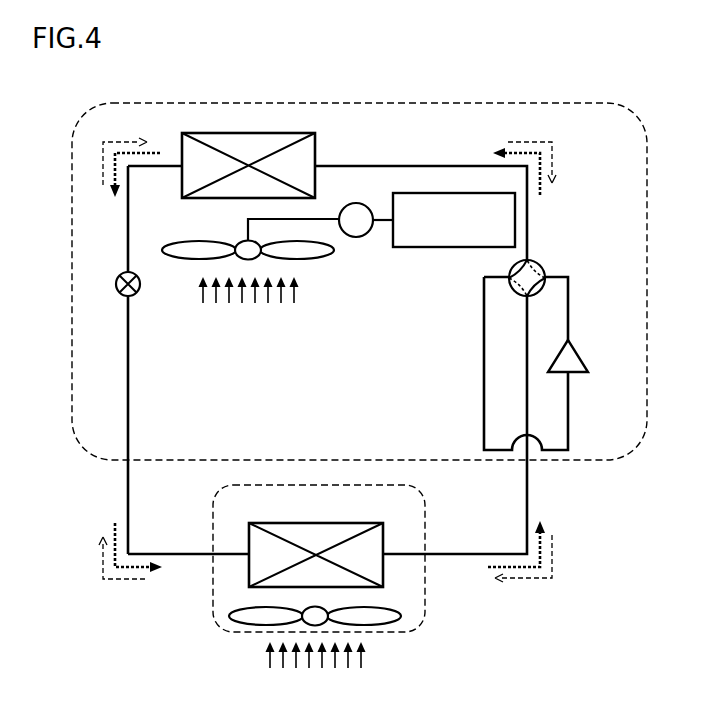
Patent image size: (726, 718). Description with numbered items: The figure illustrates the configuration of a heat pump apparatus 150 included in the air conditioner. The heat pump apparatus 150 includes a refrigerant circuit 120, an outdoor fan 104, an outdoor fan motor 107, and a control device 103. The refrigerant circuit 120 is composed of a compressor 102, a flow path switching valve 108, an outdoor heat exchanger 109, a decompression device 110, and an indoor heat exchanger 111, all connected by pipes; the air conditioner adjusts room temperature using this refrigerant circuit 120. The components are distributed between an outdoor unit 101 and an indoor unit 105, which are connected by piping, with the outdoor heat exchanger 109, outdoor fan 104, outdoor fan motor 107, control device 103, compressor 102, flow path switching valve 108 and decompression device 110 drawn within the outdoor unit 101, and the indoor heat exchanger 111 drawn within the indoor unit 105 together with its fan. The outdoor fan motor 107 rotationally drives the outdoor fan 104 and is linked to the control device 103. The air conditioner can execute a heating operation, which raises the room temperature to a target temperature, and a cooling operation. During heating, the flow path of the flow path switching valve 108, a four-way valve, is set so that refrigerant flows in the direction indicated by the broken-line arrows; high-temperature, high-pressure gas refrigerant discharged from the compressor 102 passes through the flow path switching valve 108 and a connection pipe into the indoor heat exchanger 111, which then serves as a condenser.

The outdoor unit 101 is at (647, 189).
The compressor 102 is at (578, 357).
The control device 103 is at (462, 193).
The outdoor fan 104 is at (178, 265).
The indoor unit 105 is at (238, 633).
The outdoor fan motor 107 is at (356, 237).
The flow path switching valve 108 is at (541, 264).
The outdoor heat exchanger 109 is at (286, 133).
The decompression device 110 is at (117, 294).
The indoor heat exchanger 111 is at (348, 523).
The refrigerant circuit 120 is at (118, 380).
The heat pump apparatus 150 is at (660, 63).